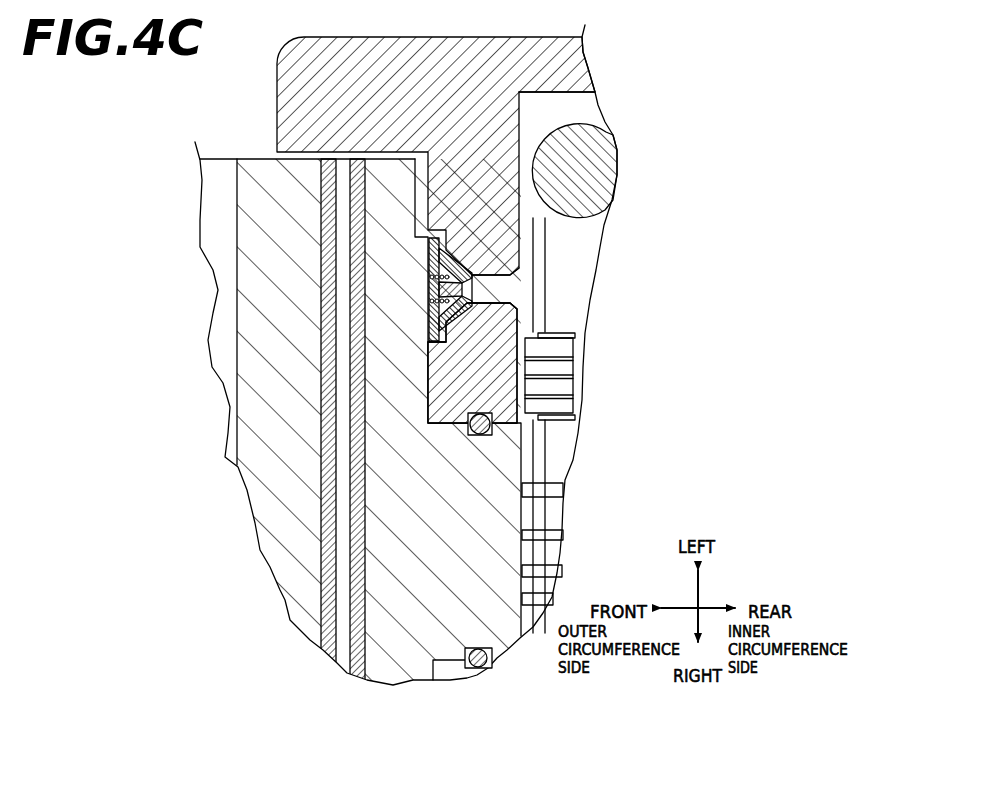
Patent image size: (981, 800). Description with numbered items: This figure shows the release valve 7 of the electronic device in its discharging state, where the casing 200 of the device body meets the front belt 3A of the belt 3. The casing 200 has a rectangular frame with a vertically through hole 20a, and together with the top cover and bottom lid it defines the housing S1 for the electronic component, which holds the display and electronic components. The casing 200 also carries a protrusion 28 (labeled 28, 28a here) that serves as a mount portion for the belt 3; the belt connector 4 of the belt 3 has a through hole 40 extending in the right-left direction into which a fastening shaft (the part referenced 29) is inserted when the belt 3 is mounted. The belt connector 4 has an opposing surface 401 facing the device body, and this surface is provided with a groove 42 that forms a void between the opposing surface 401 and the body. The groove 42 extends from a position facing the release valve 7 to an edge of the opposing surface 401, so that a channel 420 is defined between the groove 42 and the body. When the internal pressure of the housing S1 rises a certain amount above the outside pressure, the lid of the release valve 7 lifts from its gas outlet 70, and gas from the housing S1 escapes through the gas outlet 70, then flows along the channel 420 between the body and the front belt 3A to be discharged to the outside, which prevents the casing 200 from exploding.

The casing 200 is at (258, 92).
The protrusion 28 is at (391, 156).
The housing wall portion 28a is at (297, 137).
The through hole 20a is at (612, 93).
The housing for the electronic component S1 is at (612, 93).
The groove 42 is at (313, 429).
The channel 420 is at (415, 193).
The release valve 7 is at (426, 292).
The gas outlet 70 is at (495, 297).
The opposing surface 401 is at (436, 377).
The belt connector 4 is at (275, 548).
The belt 3 is at (317, 423).
The front belt 3A is at (252, 625).
The through hole 40 is at (342, 648).
The O-ring 29 is at (443, 665).